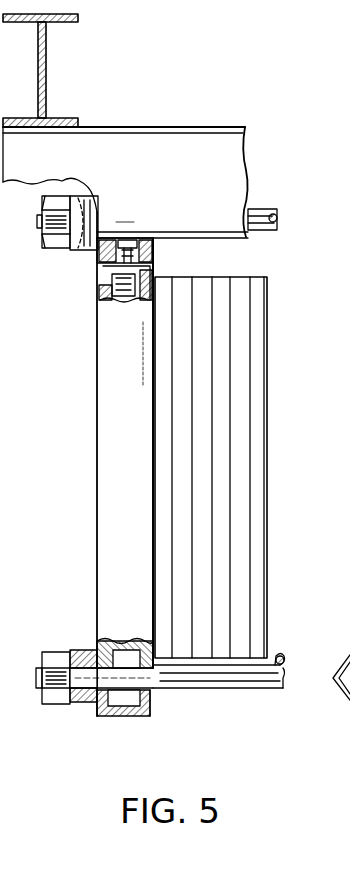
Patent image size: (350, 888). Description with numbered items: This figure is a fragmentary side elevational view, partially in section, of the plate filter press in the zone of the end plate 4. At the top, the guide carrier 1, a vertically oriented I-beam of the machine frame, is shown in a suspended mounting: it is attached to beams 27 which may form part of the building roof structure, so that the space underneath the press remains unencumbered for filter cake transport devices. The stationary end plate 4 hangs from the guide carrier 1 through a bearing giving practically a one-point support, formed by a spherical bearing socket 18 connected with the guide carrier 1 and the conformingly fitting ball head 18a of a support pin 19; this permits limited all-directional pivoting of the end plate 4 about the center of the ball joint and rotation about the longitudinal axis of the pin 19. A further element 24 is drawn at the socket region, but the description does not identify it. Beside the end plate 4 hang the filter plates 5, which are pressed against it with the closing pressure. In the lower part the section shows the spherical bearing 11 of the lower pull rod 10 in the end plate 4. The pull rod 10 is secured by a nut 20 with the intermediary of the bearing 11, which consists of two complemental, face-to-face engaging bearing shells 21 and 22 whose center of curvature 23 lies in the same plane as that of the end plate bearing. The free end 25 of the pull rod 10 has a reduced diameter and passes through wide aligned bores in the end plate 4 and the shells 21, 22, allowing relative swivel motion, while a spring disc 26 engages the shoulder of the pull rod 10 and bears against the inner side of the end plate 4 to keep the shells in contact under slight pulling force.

The guide carrier 1 is at (220, 146).
The end plate 4 is at (98, 355).
The filter plates 5 is at (243, 598).
The pull rod 10 is at (262, 211).
The spherical bearing 11 is at (79, 258).
The spherical bearing socket 18 is at (163, 252).
The head (ball) of support pin 18a is at (150, 236).
The support pin 19 is at (155, 281).
The nut 20 is at (60, 655).
The bearing shell 21 is at (82, 651).
The bearing shell 22 is at (92, 712).
The center of curvature 23 is at (125, 227).
The screw 24 is at (127, 236).
The free end of pull rod 25 is at (116, 710).
The spring disc 26 is at (154, 700).
The beams 27 is at (47, 68).